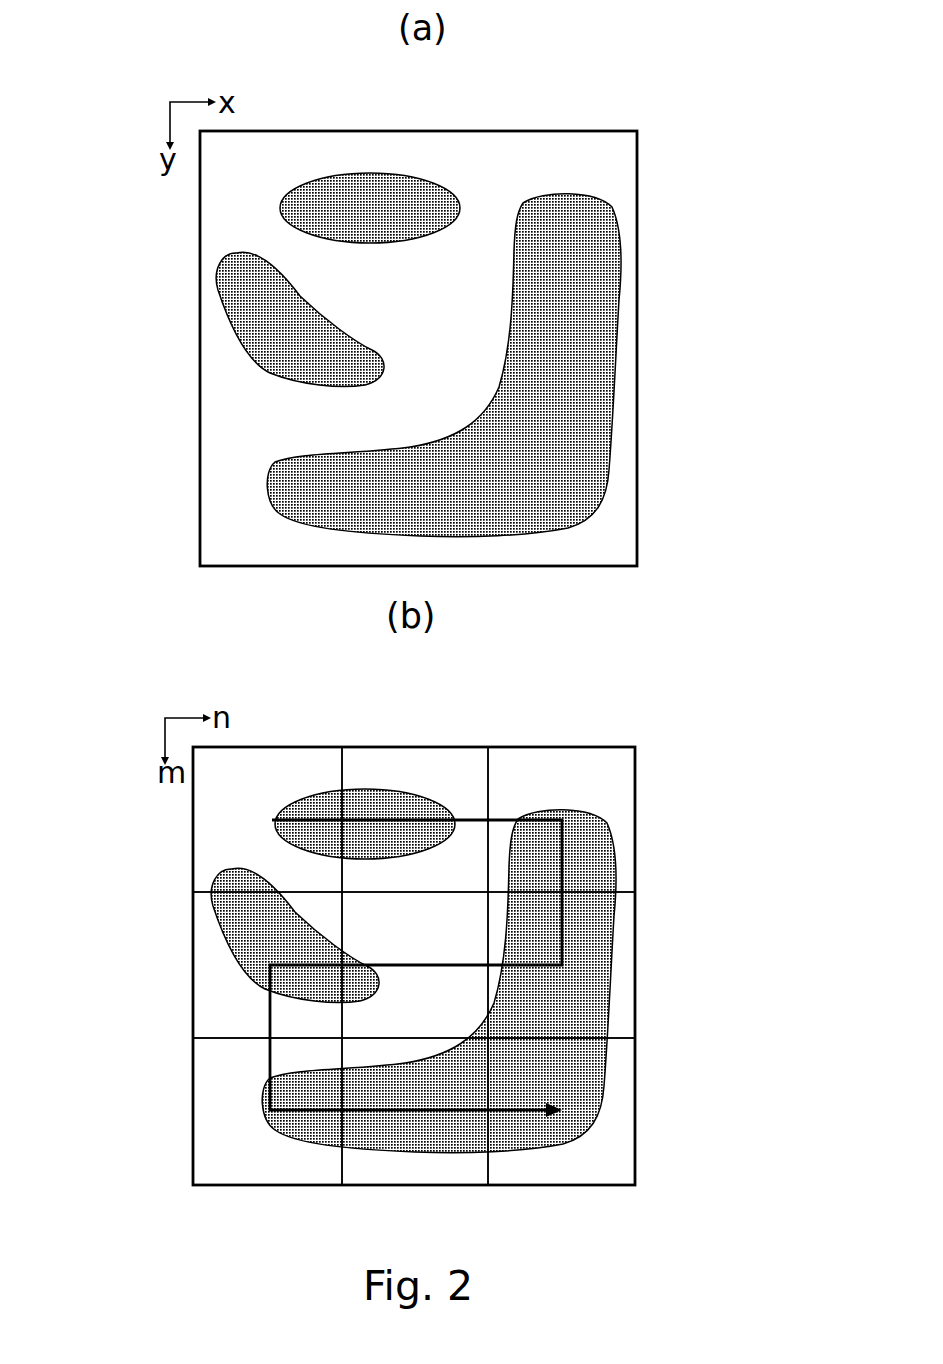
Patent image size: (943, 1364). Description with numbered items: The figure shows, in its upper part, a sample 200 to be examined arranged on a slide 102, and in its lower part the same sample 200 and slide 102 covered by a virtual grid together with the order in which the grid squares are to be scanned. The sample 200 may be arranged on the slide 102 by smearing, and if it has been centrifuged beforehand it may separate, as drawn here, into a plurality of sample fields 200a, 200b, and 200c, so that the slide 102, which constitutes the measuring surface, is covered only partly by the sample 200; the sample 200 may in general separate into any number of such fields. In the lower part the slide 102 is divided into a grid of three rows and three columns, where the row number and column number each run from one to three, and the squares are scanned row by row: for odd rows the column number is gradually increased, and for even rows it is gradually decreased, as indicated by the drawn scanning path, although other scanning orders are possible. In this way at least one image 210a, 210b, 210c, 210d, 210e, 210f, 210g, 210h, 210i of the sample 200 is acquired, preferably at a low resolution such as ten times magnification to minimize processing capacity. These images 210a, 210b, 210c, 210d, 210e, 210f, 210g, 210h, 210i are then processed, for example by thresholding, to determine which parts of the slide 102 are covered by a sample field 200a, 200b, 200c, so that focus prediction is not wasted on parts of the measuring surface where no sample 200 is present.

The sample 200 is at (684, 47).
The slide 102 is at (638, 510).
The sample field 200a is at (373, 190).
The sample field 200b is at (238, 287).
The sample field 200c is at (588, 230).
The image 210a is at (217, 820).
The image 210b is at (385, 768).
The image 210c is at (610, 775).
The image 210d is at (583, 957).
The image 210e is at (375, 1000).
The image 210f is at (217, 942).
The image 210g is at (247, 1163).
The image 210h is at (413, 1140).
The image 210i is at (598, 1108).